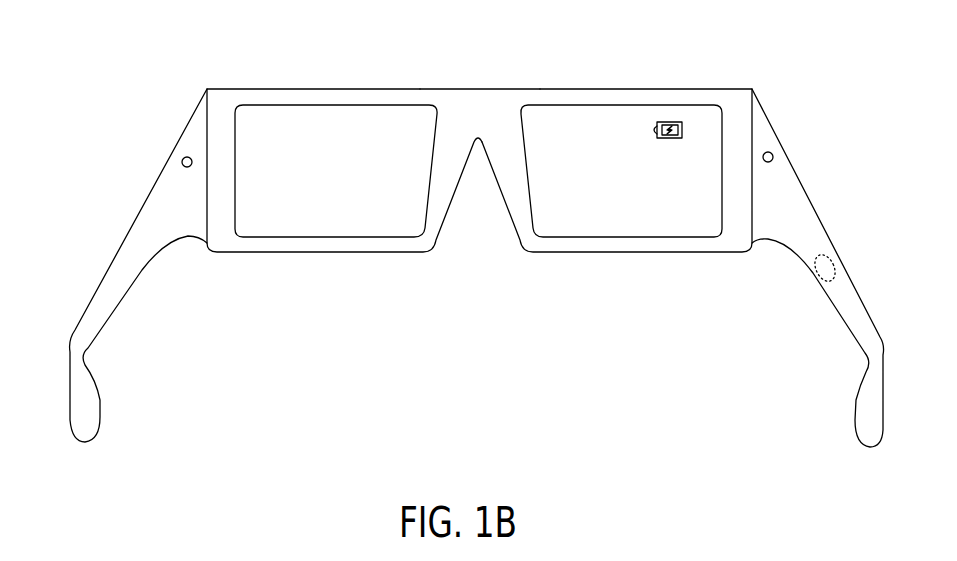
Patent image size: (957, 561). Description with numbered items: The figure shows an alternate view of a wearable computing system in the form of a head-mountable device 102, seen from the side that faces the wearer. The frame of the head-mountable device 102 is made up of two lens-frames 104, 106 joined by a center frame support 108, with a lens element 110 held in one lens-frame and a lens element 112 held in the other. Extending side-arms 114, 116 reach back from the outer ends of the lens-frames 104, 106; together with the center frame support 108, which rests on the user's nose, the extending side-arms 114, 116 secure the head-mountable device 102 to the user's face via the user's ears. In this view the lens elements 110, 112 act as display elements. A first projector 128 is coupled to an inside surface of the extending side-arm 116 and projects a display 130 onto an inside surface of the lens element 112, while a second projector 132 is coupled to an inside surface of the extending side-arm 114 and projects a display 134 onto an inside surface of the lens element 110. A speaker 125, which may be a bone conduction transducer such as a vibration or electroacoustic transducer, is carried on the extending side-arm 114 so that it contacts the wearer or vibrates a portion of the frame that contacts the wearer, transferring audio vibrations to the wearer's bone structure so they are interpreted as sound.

The head-mountable device 102 is at (260, 76).
The lens-frame 104 is at (707, 252).
The lens-frame 106 is at (257, 253).
The center frame support 108 is at (478, 89).
The lens element 110 is at (587, 230).
The lens element 112 is at (352, 230).
The extending side-arm 114 is at (807, 198).
The extending side-arm 116 is at (128, 232).
The speaker 125 is at (822, 275).
The first projector 128 is at (182, 159).
The display 130 is at (322, 135).
The second projector 132 is at (769, 151).
The display 134 is at (658, 137).